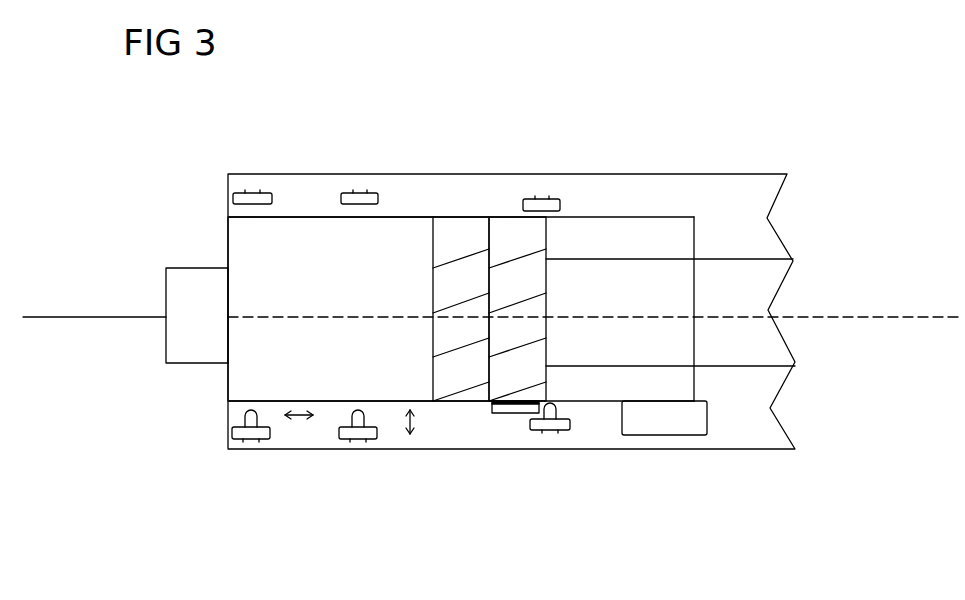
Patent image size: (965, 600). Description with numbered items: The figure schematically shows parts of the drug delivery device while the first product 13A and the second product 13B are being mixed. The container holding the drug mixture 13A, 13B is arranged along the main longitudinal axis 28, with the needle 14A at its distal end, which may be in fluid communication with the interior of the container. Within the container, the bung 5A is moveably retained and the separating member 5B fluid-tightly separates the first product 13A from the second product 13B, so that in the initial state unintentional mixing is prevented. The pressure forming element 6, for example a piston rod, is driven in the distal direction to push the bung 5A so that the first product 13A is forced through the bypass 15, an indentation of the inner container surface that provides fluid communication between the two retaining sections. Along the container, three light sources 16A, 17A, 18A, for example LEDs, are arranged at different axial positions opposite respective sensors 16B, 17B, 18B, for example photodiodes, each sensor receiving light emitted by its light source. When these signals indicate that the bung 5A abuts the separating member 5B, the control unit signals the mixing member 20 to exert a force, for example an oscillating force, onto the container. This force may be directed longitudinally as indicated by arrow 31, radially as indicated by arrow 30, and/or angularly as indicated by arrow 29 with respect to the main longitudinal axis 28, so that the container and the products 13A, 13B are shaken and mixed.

The bung 5A is at (498, 217).
The separating member 5B is at (442, 217).
The pressure forming element 6 is at (727, 345).
The first product 13A is at (267, 328).
The second product 13B is at (268, 355).
The needle 14A is at (62, 318).
The bypass 15 is at (503, 413).
The light source 16A is at (250, 440).
The sensor 16B is at (252, 193).
The light source 17A is at (347, 441).
The sensor 17B is at (358, 193).
The light source 18A is at (550, 432).
The sensor 18B is at (543, 190).
The mixing member 20 is at (630, 427).
The main longitudinal axis 28 is at (910, 315).
The arrow 29 is at (860, 331).
The arrow 30 is at (407, 440).
The arrow 31 is at (295, 420).